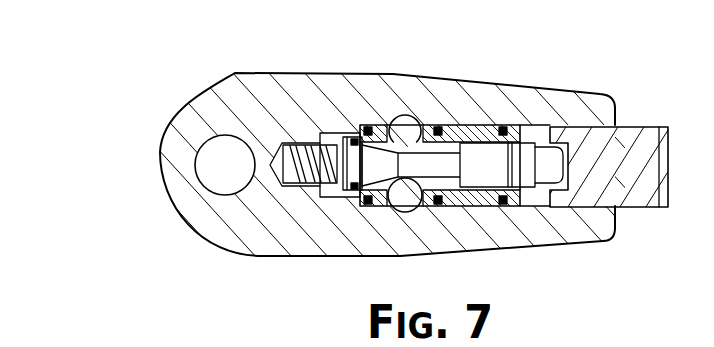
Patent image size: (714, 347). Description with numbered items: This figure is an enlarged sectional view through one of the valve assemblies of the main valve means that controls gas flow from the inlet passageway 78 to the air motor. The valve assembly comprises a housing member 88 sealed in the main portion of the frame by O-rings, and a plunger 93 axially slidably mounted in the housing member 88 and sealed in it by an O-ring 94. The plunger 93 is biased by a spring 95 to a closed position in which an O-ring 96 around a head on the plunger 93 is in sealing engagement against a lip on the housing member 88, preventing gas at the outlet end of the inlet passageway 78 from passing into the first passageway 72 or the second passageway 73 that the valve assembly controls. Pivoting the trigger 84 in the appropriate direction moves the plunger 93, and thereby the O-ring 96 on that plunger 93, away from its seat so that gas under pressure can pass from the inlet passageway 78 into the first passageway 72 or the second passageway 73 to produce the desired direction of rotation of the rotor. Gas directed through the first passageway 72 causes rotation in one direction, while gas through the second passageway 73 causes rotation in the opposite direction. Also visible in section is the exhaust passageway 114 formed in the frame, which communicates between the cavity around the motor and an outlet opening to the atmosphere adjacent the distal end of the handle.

The first passageway 72 is at (407, 212).
The second passageway 73 is at (403, 115).
The inlet passageway 78 is at (338, 188).
The trigger 84 is at (643, 138).
The housing member 88 is at (456, 126).
The plunger 93 is at (378, 203).
The O-ring 94 is at (508, 148).
The spring 95 is at (300, 143).
The O-ring 96 is at (350, 133).
The exhaust passageway 114 is at (200, 161).